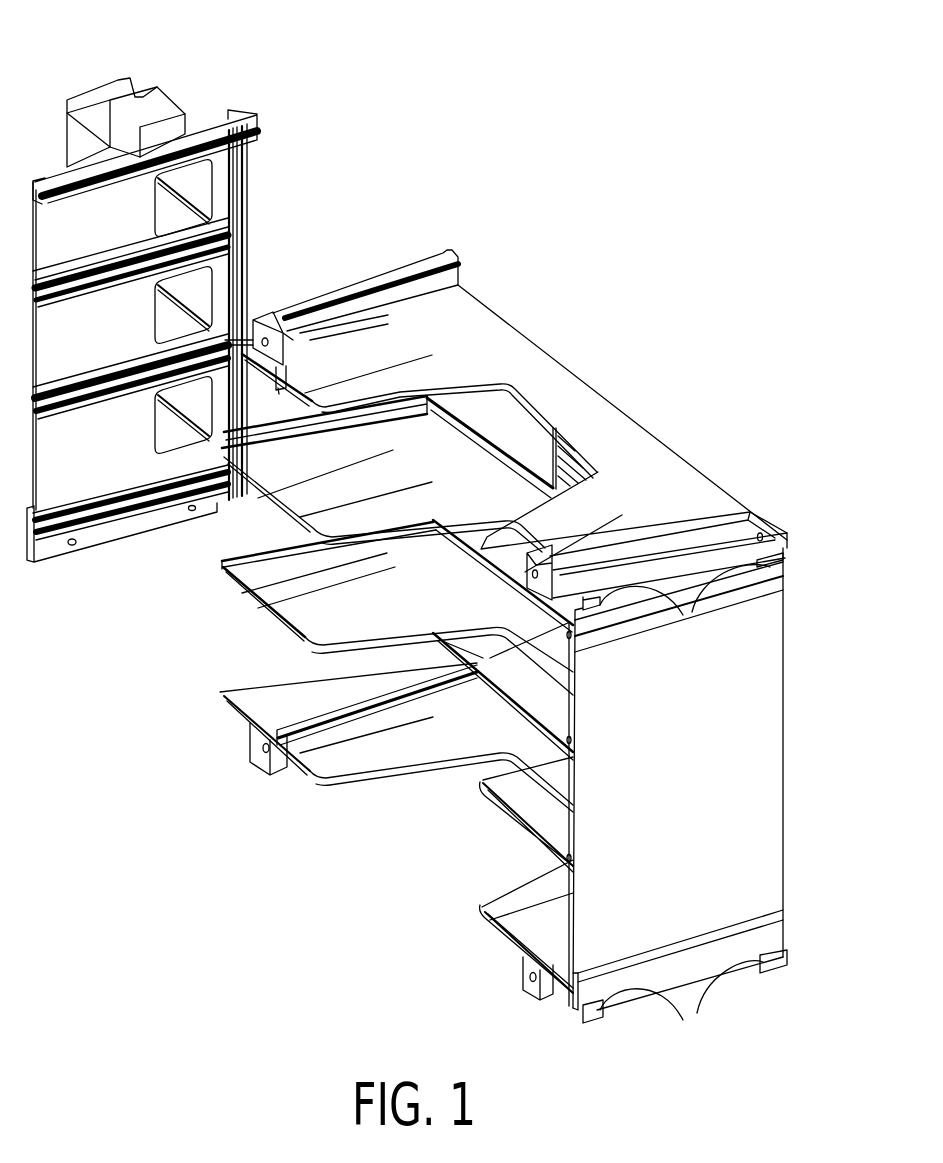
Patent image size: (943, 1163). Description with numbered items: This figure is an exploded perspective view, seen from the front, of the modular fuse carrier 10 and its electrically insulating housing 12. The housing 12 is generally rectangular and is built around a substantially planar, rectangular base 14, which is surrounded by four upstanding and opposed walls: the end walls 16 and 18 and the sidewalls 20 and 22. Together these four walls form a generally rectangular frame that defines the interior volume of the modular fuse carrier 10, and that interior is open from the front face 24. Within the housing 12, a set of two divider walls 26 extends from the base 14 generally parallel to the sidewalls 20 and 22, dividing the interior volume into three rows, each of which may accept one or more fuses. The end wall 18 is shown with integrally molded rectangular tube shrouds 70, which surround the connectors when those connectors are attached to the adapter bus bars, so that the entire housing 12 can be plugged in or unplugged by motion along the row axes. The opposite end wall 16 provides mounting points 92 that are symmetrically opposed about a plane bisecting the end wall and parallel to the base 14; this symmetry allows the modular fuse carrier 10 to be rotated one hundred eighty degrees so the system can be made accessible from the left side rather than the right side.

The modular fuse carrier 10 is at (531, 240).
The housing 12 is at (585, 297).
The base 14 is at (530, 440).
The end wall 16 is at (745, 727).
The end wall 18 is at (208, 120).
The sidewall 20 is at (678, 503).
The sidewall 22 is at (540, 931).
The front face 24 is at (148, 645).
The divider walls 26 is at (246, 584).
The rectangular tube shrouds 70 is at (98, 96).
The mounting points 92 is at (693, 609).